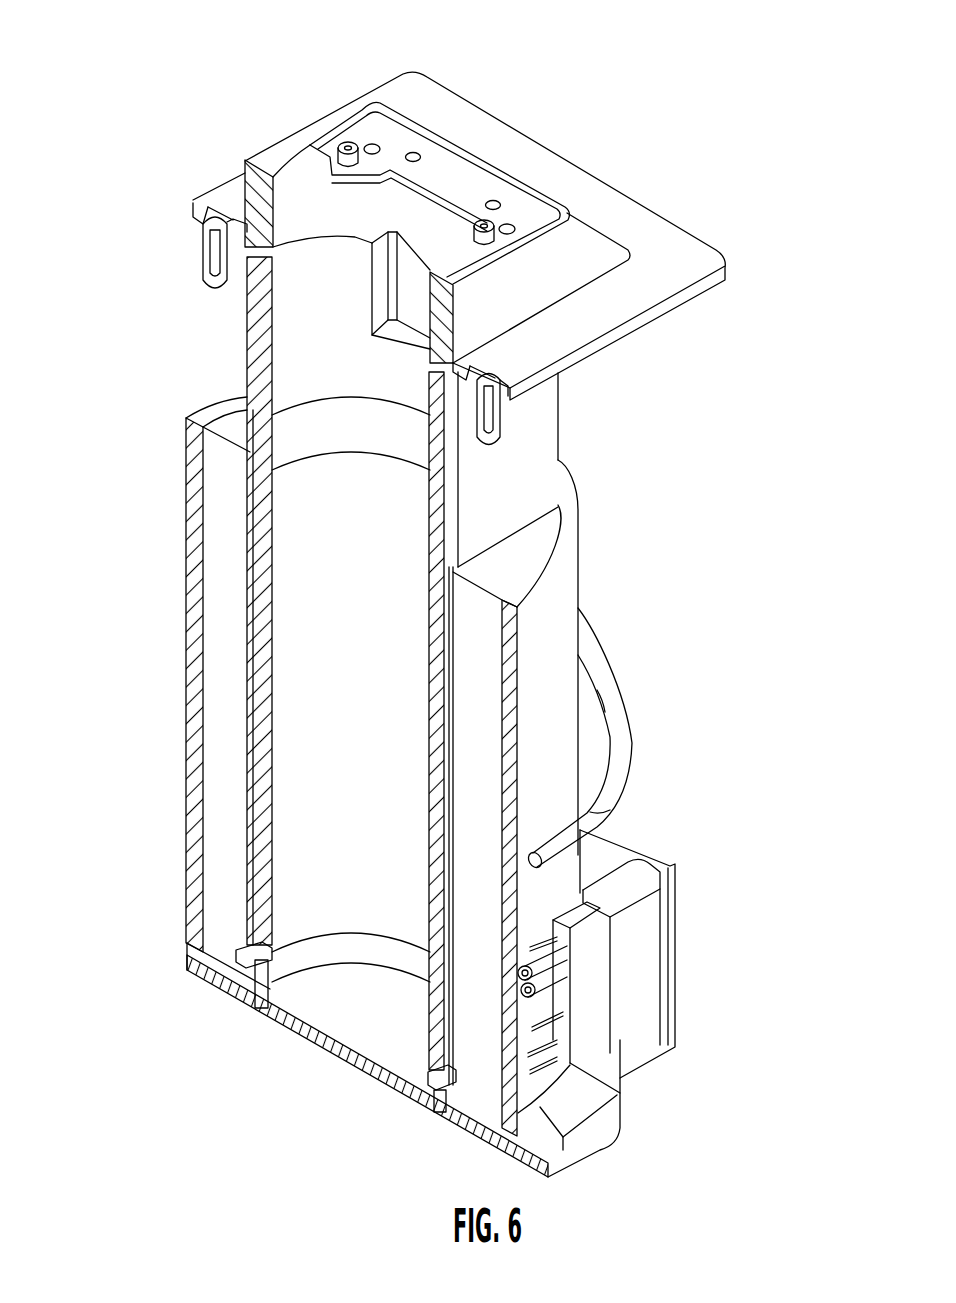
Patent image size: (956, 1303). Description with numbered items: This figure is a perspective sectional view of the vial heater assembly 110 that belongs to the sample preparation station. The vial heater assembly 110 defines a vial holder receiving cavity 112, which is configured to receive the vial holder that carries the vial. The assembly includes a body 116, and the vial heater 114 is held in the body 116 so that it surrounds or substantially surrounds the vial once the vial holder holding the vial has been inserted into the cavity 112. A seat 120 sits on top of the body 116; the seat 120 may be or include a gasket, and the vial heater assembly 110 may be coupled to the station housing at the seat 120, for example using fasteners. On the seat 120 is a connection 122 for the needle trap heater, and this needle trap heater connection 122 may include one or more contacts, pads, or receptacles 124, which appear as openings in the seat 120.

The vial heater assembly 110 is at (431, 717).
The vial holder receiving cavity 112 is at (323, 492).
The vial heater 114 is at (258, 685).
The body 116 is at (590, 423).
The seat 120 is at (668, 245).
The connection for the needle trap heater 122 is at (476, 180).
The receptacles 124 is at (414, 152).